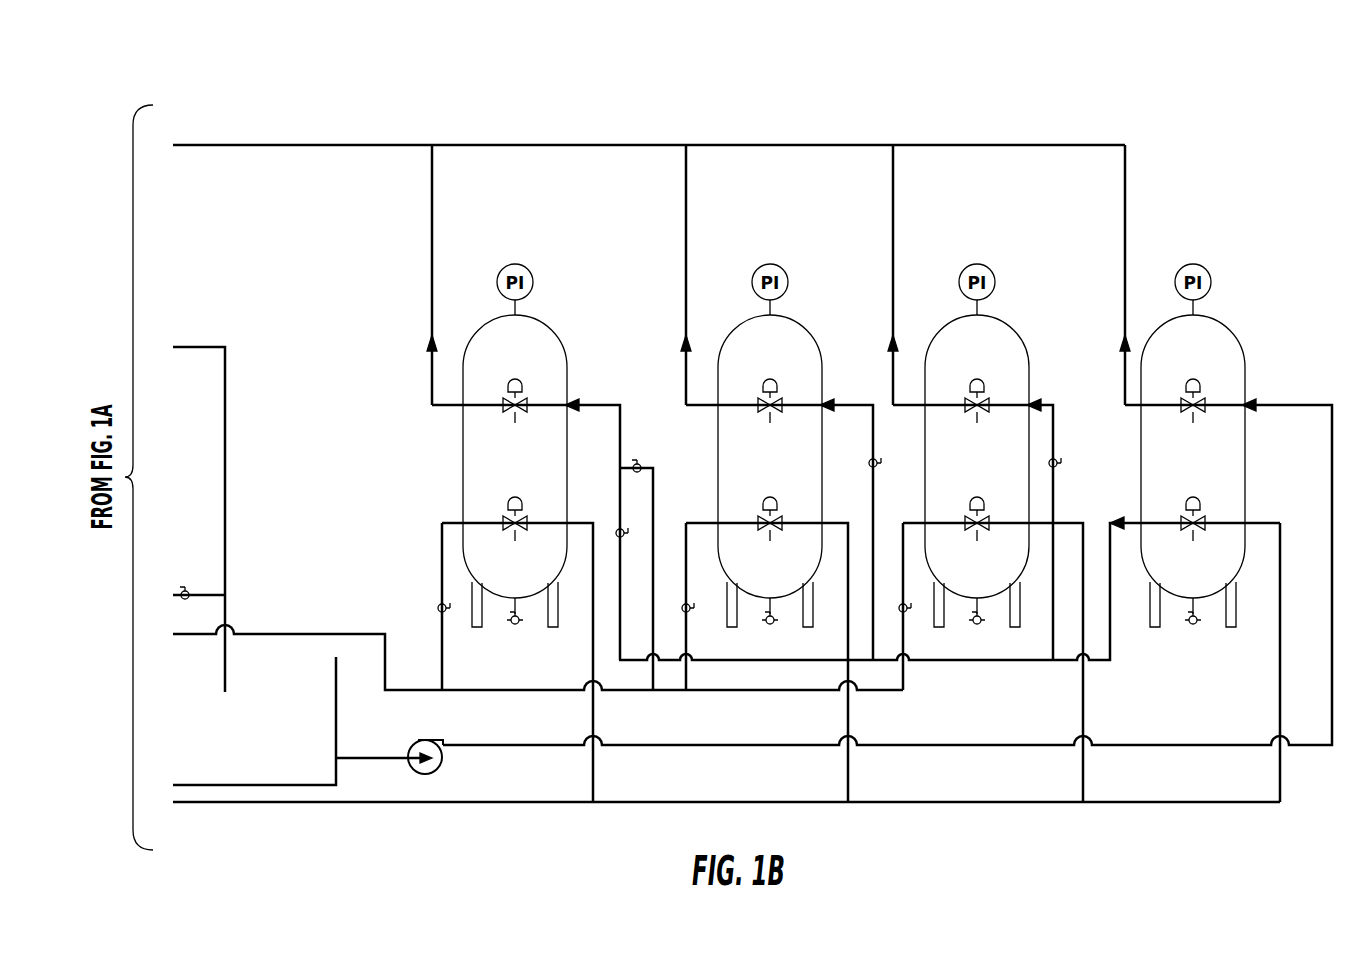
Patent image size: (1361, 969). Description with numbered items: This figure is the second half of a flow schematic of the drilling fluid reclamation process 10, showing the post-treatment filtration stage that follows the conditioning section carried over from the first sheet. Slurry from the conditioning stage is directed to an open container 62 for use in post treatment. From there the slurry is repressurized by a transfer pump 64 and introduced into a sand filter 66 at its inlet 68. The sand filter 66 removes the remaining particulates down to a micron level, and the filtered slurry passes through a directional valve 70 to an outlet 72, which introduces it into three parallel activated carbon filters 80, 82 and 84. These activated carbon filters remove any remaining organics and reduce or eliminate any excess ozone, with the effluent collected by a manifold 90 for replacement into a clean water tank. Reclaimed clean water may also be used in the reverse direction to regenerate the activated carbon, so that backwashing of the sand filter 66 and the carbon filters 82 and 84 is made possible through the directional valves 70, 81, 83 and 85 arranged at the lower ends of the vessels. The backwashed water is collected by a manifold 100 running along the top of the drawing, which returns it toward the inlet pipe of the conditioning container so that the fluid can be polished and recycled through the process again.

The drawing fluid reclamation process 10 is at (380, 54).
The manifold collecting the backwashed water 100 is at (196, 145).
The manifold 90 is at (300, 634).
The open container 62 is at (288, 765).
The transfer pump 64 is at (418, 775).
The sand filter 66 is at (1228, 330).
The inlet 68 is at (1258, 404).
The directional valve 70 is at (1210, 520).
The outlet 72 is at (1140, 519).
The activated carbon filter 80 is at (1004, 320).
The directional valve 81 is at (980, 530).
The activated carbon filter 82 is at (797, 321).
The directional valve 83 is at (775, 530).
The activated carbon filter 84 is at (540, 323).
The directional valve 85 is at (518, 528).